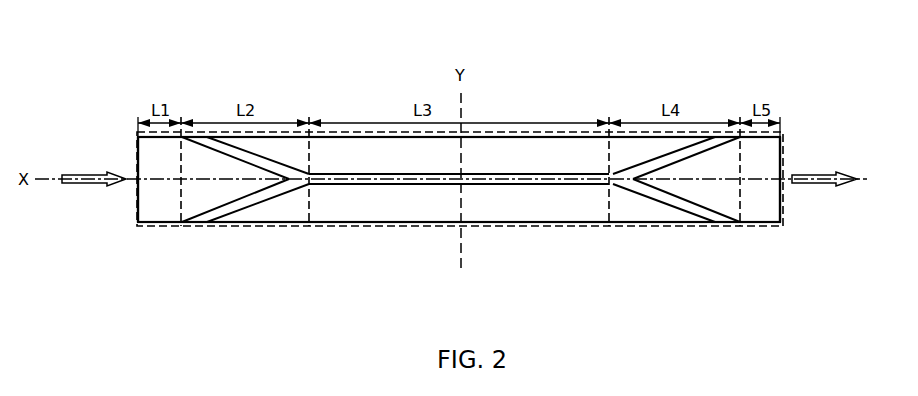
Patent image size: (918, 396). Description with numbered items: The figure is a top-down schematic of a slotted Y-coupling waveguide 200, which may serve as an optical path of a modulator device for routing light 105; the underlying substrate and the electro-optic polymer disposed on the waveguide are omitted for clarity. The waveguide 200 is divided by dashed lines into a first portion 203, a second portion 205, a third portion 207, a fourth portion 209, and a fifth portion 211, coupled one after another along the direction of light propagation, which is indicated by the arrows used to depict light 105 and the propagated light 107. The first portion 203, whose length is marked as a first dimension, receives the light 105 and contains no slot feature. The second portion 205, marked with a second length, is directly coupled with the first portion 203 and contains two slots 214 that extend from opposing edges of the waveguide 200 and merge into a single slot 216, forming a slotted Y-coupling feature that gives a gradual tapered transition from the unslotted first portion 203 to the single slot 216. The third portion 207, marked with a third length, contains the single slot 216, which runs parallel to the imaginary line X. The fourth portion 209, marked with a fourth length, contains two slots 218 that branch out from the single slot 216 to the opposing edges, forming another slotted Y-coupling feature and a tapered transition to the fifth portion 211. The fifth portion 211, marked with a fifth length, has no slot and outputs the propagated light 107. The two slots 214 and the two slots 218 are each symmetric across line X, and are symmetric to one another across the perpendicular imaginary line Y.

The light 105 is at (96, 173).
The propagated light 107 is at (847, 173).
The slotted Y-coupling waveguide 200 is at (556, 76).
The first portion 203 is at (160, 226).
The second portion 205 is at (253, 226).
The third portion 207 is at (472, 226).
The fourth portion 209 is at (658, 226).
The fifth portion 211 is at (757, 226).
The two slots 214 is at (243, 154).
The single slot 216 is at (403, 184).
The two slots 218 is at (679, 154).